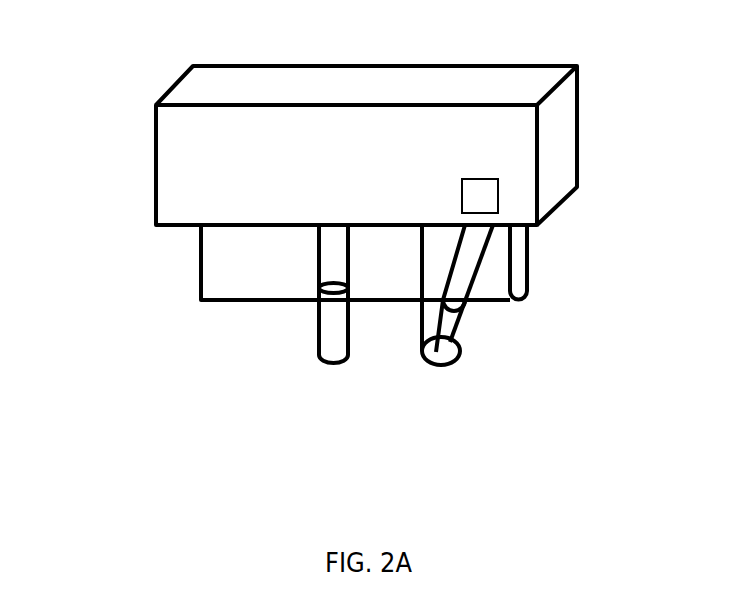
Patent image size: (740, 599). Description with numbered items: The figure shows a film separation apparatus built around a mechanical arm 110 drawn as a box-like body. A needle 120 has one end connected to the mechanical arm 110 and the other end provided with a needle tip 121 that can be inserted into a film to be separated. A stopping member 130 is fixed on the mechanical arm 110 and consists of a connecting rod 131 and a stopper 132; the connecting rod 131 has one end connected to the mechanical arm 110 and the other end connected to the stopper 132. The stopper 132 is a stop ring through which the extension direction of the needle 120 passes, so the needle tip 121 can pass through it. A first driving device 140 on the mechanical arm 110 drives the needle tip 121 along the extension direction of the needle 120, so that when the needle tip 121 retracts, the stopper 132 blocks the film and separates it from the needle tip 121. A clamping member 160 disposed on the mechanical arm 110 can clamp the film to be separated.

The mechanical arm 110 is at (502, 148).
The needle 120 is at (465, 273).
The needle tip 121 is at (448, 320).
The stopping member 130 is at (307, 364).
The connecting rod 131 is at (422, 305).
The stopper 132 is at (433, 362).
The first driving device 140 is at (482, 192).
The clamping member 160 is at (330, 278).